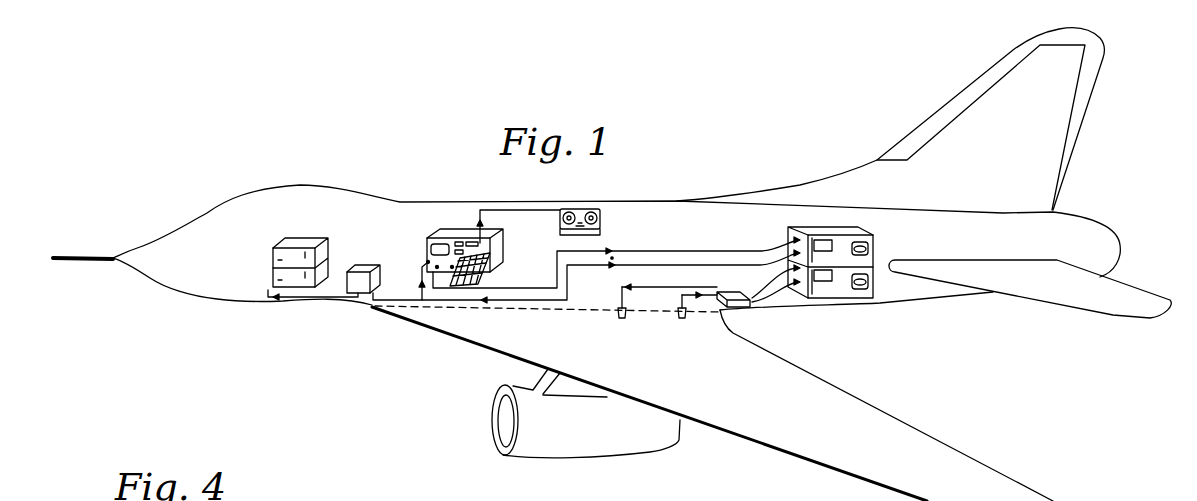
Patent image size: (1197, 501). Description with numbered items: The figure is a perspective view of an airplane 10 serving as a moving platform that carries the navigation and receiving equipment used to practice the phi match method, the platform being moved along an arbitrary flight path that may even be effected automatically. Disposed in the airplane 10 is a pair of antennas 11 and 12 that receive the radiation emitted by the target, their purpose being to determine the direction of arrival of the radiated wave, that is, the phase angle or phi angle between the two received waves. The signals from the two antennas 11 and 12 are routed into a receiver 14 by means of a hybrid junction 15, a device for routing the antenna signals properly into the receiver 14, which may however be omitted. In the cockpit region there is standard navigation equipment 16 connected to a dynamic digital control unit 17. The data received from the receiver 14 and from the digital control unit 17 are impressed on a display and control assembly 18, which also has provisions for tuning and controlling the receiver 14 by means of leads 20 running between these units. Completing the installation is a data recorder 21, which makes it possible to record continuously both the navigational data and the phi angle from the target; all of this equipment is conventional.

The airplane 10 is at (363, 195).
The antenna 11 is at (617, 313).
The antenna 12 is at (677, 313).
The receiver 14 is at (875, 290).
The hybrid junction 15 is at (745, 294).
The navigation equipment 16 is at (273, 275).
The dynamic digital control unit 17 is at (375, 265).
The display and control assembly 18 is at (435, 236).
The leads 20 is at (671, 262).
The data recorder 21 is at (602, 229).